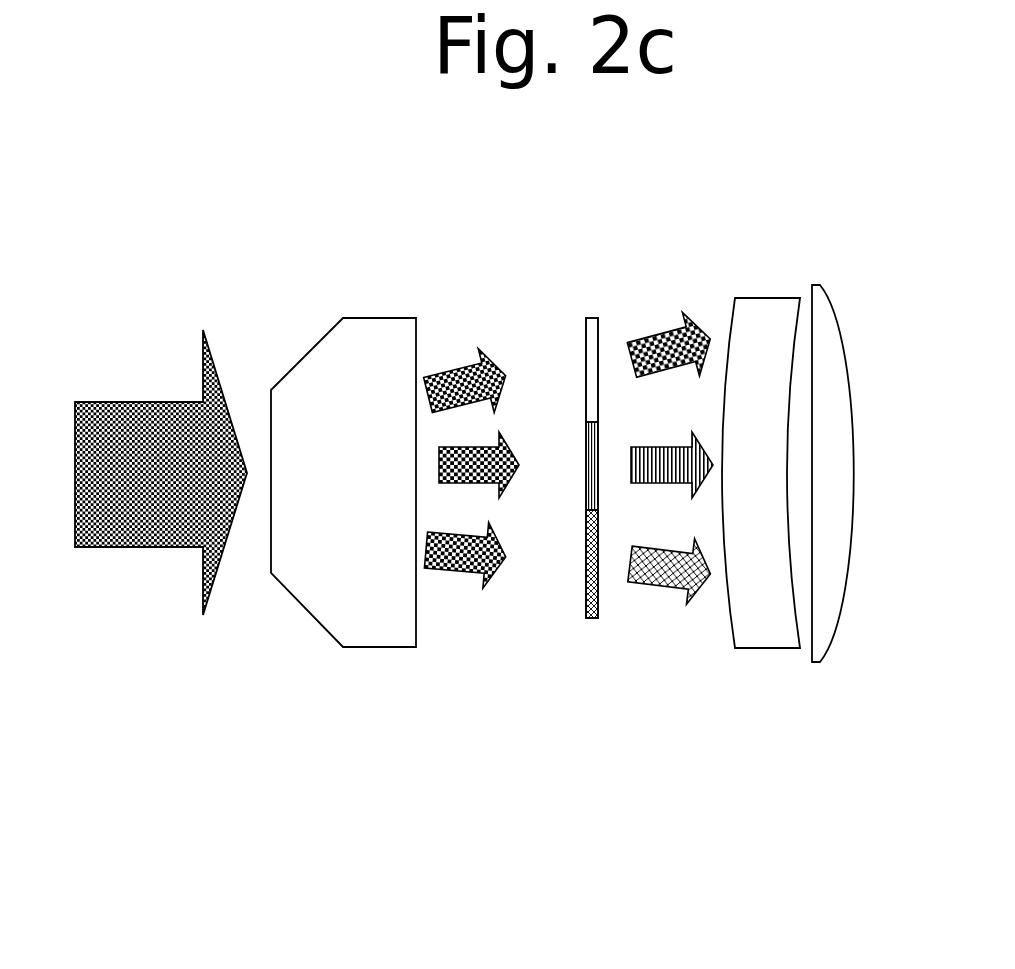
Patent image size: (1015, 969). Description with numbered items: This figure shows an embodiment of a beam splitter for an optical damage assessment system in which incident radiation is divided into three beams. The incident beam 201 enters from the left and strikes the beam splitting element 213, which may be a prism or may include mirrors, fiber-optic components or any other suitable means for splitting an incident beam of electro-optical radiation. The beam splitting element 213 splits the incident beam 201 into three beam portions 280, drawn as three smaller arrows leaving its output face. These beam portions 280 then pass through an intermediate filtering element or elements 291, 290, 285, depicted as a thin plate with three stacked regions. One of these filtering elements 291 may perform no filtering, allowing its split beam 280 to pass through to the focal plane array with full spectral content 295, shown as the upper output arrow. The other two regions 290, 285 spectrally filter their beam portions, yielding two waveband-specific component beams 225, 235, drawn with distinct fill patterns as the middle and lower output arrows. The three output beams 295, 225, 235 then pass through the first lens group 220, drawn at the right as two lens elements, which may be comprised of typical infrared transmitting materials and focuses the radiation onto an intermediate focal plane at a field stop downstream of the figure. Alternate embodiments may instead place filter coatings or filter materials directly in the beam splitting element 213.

The incident beam 201 is at (152, 496).
The beam splitting element 213 is at (265, 540).
The first lens group 220 is at (852, 428).
The spectrally-filtered component beam 225 is at (744, 321).
The spectrally-filtered component beam 235 is at (702, 637).
The beam portions 280 is at (413, 562).
The intermediate filtering element 285 is at (515, 530).
The intermediate filtering element 290 is at (453, 368).
The intermediate filtering element 291 is at (458, 307).
The full spectral content beam 295 is at (552, 275).